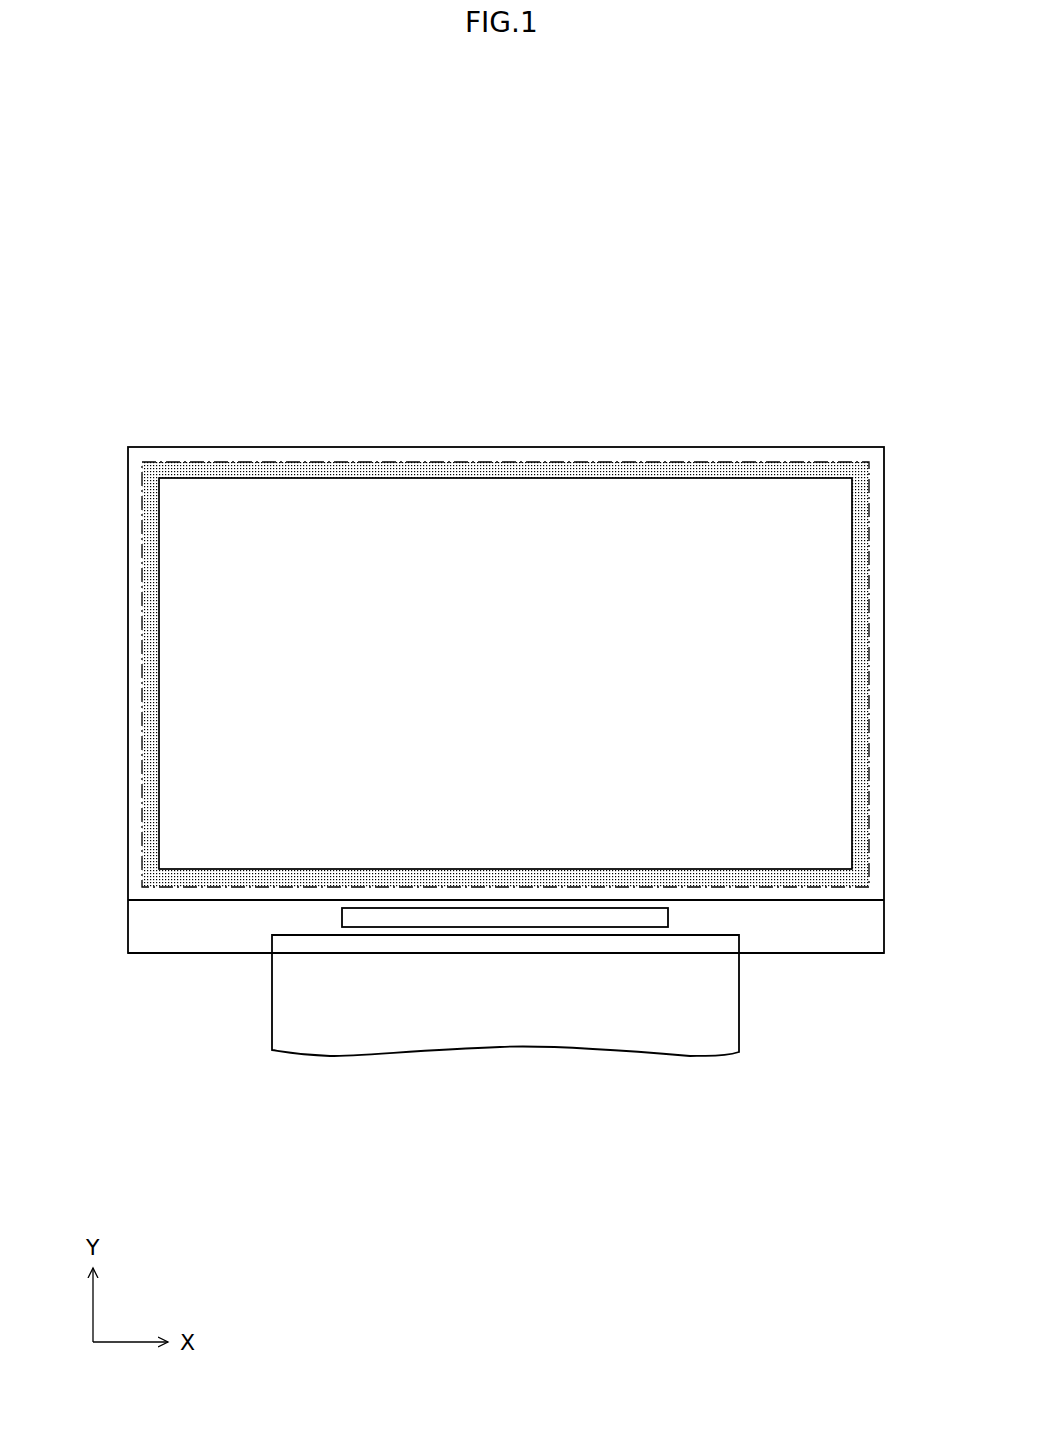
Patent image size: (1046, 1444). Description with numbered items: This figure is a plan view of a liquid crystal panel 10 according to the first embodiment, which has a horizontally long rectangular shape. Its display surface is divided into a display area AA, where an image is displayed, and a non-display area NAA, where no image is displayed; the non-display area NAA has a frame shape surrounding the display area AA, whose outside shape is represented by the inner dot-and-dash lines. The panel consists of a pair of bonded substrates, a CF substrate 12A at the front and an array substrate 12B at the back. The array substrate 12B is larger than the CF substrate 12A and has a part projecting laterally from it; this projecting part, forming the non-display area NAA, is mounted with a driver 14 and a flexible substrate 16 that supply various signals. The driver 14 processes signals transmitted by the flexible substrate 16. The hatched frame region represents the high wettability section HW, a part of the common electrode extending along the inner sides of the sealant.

The liquid crystal panel 10 is at (651, 447).
The high wettability section HW is at (771, 467).
The display area AA is at (498, 505).
The non-display area NAA is at (172, 915).
The CF substrate 12A is at (845, 901).
The array substrate 12B is at (224, 955).
The driver 14 is at (517, 916).
The flexible substrate 16 is at (398, 1030).